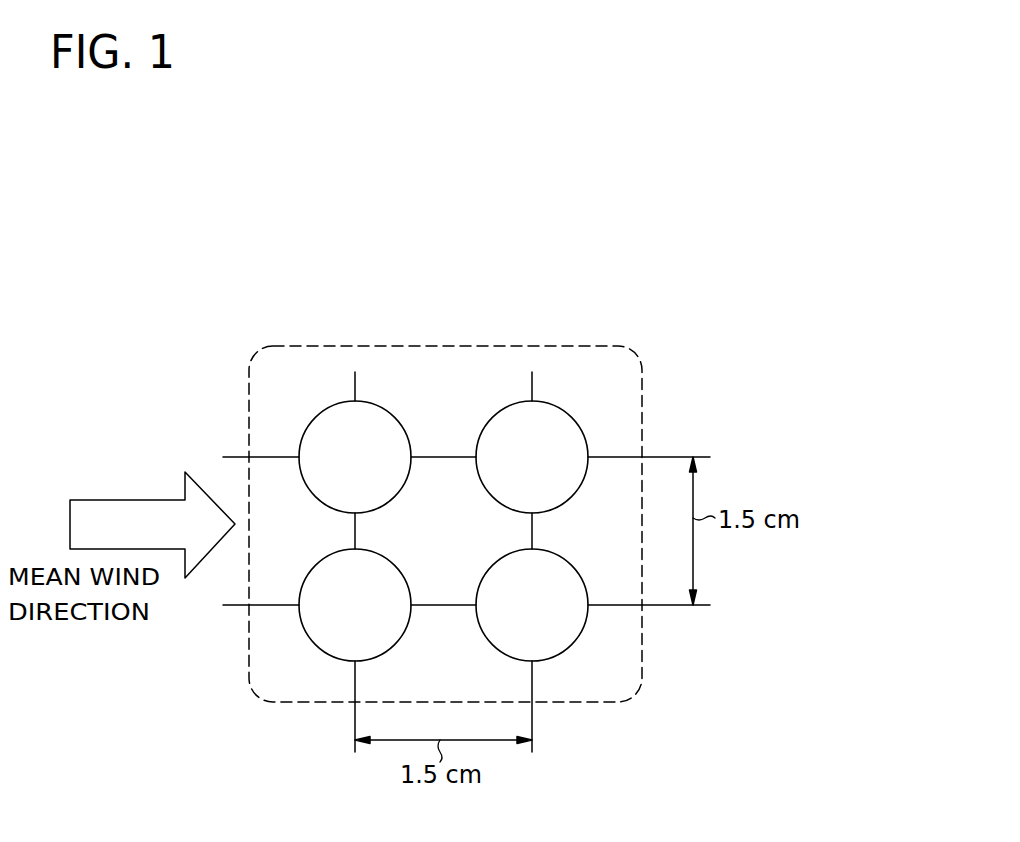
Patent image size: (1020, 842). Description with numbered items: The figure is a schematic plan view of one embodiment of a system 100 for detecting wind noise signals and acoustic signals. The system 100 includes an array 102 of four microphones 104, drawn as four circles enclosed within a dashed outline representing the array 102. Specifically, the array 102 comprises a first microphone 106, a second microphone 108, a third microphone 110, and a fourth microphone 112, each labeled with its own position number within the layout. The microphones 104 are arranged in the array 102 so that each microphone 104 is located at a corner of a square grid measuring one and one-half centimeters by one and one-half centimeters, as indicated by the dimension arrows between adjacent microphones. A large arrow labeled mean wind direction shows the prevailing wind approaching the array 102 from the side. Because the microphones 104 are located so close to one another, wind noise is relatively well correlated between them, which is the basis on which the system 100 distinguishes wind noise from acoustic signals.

The system for detecting wind noise and acoustic signals 100 is at (600, 278).
The array 102 is at (632, 349).
The microphones 104 is at (370, 403).
The first microphone 106 is at (306, 637).
The second microphone 108 is at (306, 489).
The third microphone 110 is at (483, 637).
The fourth microphone 112 is at (483, 489).